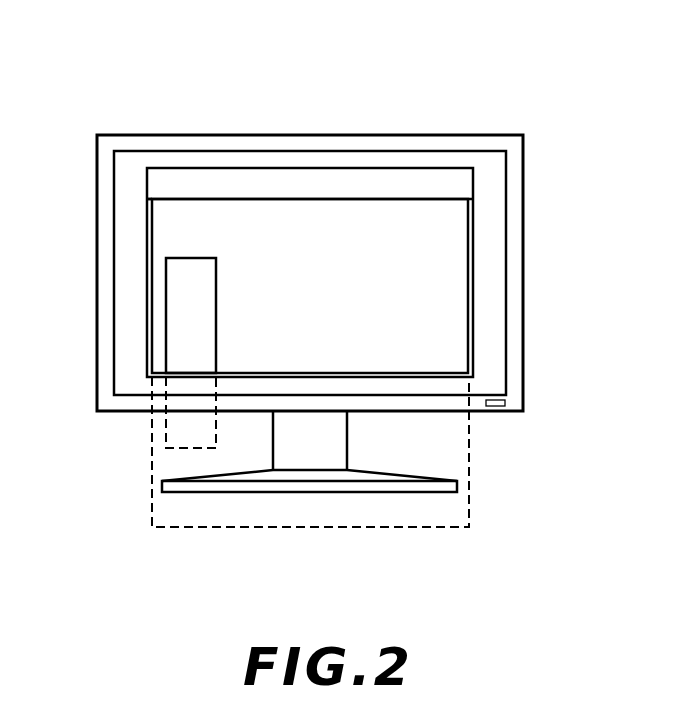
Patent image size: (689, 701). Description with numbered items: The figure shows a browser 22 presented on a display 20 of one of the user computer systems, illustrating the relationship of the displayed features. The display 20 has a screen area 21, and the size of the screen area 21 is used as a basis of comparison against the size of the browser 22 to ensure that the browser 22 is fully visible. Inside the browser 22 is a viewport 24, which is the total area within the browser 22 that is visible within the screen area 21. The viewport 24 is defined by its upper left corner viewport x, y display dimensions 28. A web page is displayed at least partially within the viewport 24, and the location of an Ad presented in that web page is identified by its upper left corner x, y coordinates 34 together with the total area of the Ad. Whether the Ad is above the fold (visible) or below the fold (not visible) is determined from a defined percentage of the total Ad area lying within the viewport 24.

The display 20 is at (607, 80).
The screen area 21 is at (496, 167).
The browser 22 is at (303, 176).
The viewport 24 is at (436, 199).
The viewport x, y display dimensions 28 is at (148, 198).
The Ad upper left corner x, y coordinates 34 is at (166, 258).